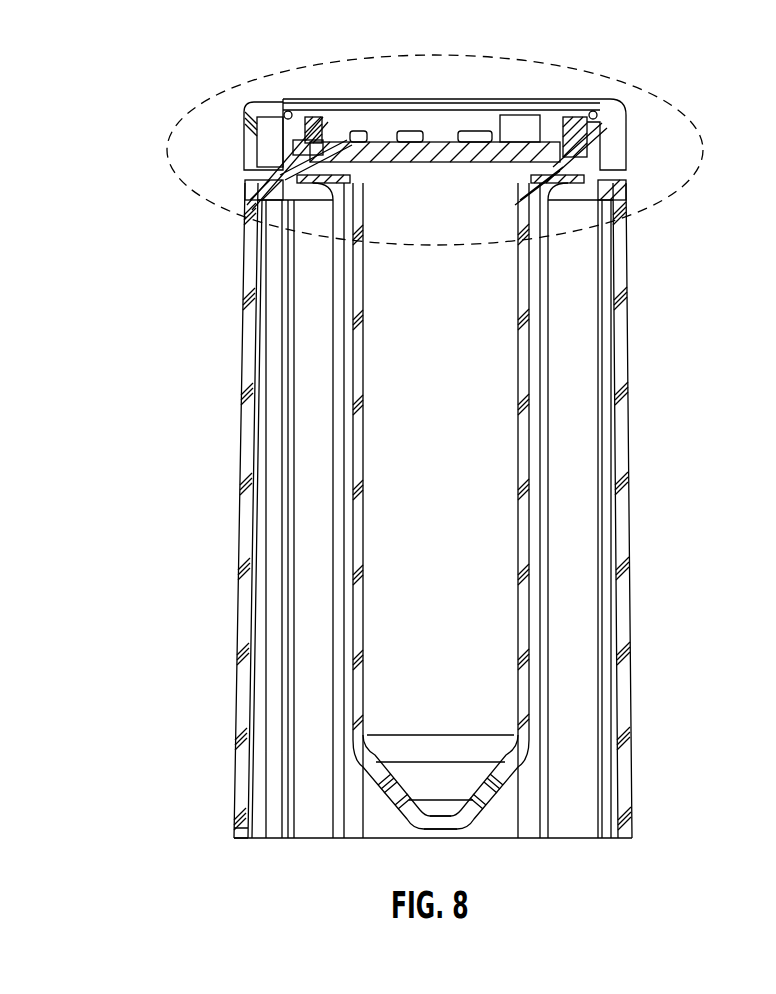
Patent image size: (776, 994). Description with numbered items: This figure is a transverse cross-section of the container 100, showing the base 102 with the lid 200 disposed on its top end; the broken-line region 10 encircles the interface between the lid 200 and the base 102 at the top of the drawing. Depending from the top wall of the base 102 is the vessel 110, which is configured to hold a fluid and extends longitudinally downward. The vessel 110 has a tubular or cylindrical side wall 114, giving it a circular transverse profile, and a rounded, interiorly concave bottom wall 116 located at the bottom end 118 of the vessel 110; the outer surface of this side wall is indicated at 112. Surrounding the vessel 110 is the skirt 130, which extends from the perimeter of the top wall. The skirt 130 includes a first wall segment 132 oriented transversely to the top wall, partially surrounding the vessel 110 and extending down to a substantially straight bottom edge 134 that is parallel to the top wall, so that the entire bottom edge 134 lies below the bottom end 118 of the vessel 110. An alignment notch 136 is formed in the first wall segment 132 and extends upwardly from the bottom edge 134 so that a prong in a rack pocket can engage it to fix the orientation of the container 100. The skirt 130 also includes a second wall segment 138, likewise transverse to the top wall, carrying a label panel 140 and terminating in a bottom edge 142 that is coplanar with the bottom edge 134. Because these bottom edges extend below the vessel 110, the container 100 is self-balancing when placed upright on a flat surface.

The lid-to-container interface detail region 10 is at (437, 56).
The container 100 is at (630, 60).
The lid 200 is at (640, 121).
The base 102 is at (438, 528).
The vessel 110 is at (353, 531).
The inner vessel outer surface 112 is at (345, 700).
The side wall 114 is at (350, 468).
The bottom wall 116 is at (394, 816).
The bottom end 118 is at (444, 832).
The skirt 130 is at (637, 512).
The first wall segment 132 is at (629, 598).
The bottom edge 134 is at (572, 838).
The alignment notch 136 is at (628, 738).
The second wall segment 138 is at (247, 304).
The label panel 140 is at (246, 498).
The bottom edge 142 is at (240, 834).